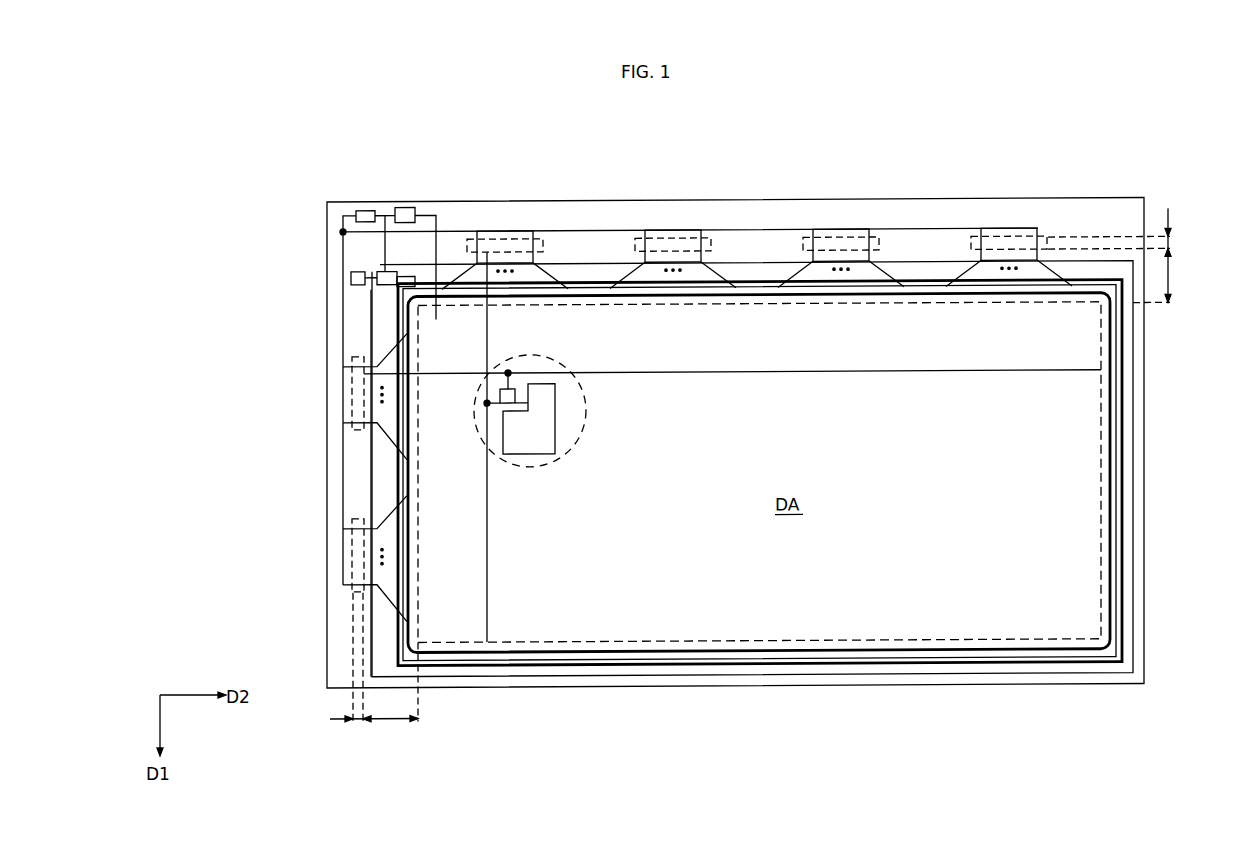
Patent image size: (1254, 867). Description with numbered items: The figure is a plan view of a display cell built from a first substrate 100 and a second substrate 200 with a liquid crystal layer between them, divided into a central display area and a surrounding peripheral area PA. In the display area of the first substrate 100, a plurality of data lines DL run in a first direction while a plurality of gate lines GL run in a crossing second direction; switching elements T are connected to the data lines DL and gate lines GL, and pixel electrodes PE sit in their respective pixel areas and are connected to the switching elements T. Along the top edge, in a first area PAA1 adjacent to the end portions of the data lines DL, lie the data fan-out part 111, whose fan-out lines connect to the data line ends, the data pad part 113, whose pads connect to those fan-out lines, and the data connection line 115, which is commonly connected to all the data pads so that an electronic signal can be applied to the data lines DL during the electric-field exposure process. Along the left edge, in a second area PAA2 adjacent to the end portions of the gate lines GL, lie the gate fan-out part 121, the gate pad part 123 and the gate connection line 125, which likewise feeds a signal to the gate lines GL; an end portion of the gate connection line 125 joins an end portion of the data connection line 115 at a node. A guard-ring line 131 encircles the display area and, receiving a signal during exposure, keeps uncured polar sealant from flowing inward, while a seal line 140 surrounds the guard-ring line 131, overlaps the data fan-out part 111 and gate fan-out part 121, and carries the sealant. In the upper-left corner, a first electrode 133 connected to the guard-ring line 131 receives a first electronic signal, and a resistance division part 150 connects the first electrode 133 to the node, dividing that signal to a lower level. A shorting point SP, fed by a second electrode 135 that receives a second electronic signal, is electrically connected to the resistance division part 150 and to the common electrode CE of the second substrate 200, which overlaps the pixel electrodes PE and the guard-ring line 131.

The first substrate 100 is at (1146, 497).
The second substrate 200 is at (1136, 531).
The guard-ring line 131 is at (1114, 598).
The seal line 140 is at (1043, 658).
The resistance division part 150 is at (362, 211).
The first electrode 133 is at (407, 208).
The second electrode 135 is at (351, 279).
The data connection line 115 is at (914, 231).
The data pad part 113 is at (1169, 217).
The data fan-out part 111 is at (1169, 274).
The gate connection line 125 is at (343, 448).
The gate pad part 123 is at (333, 722).
The gate fan-out part 121 is at (386, 722).
The shorting point SP is at (378, 272).
The first area PAA1 is at (757, 220).
The second area PAA2 is at (331, 484).
The gate line GL is at (783, 376).
The data line DL is at (488, 572).
The switching element T is at (510, 367).
The pixel electrode PE is at (555, 414).
The peripheral area PA is at (823, 685).
The common electrode CE is at (957, 667).